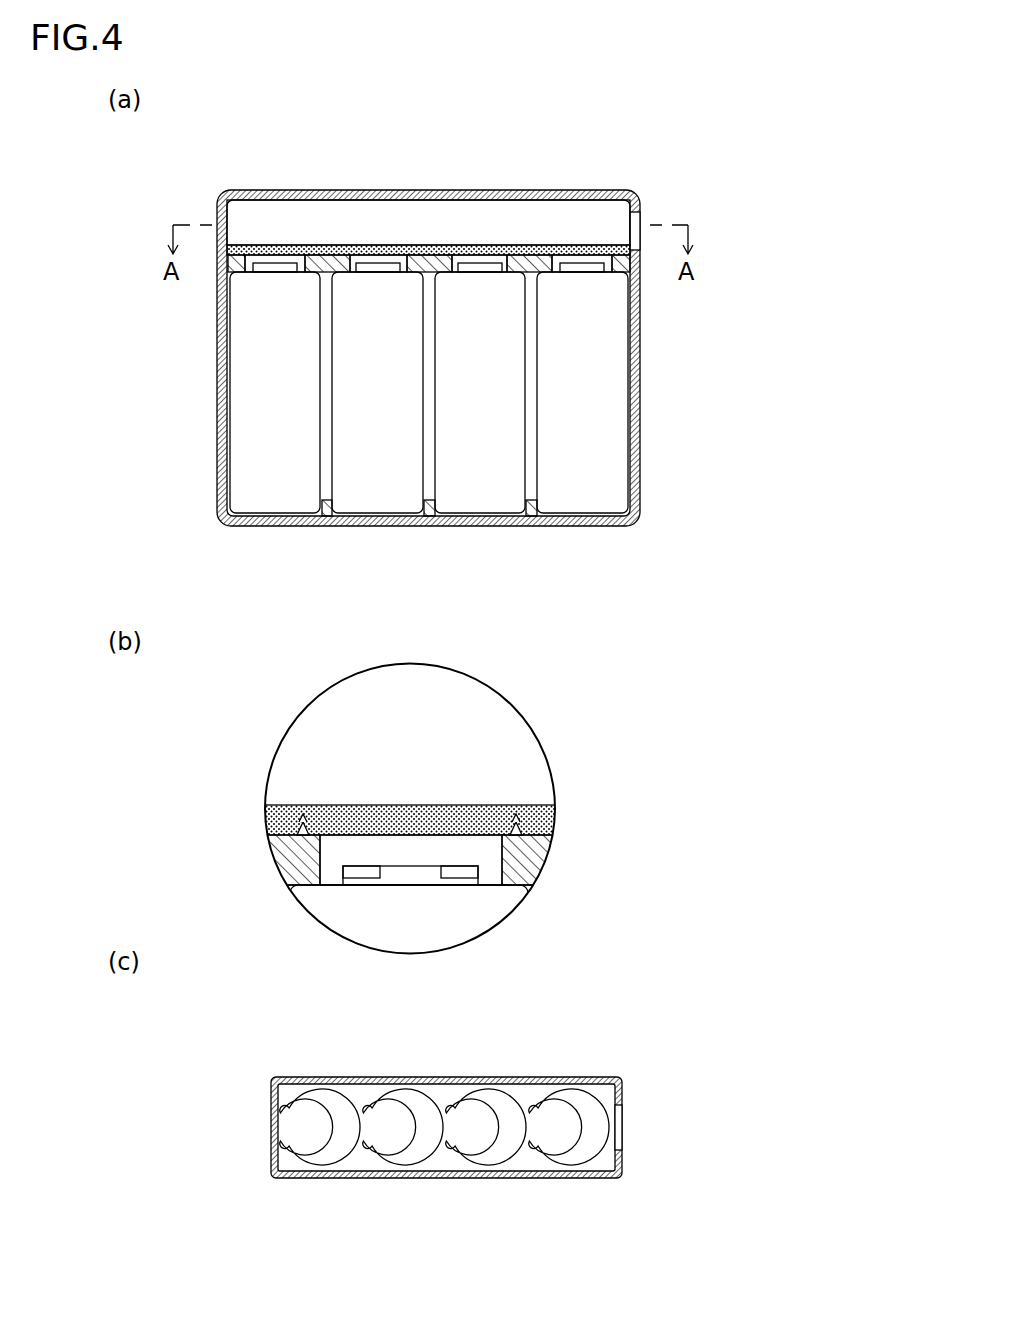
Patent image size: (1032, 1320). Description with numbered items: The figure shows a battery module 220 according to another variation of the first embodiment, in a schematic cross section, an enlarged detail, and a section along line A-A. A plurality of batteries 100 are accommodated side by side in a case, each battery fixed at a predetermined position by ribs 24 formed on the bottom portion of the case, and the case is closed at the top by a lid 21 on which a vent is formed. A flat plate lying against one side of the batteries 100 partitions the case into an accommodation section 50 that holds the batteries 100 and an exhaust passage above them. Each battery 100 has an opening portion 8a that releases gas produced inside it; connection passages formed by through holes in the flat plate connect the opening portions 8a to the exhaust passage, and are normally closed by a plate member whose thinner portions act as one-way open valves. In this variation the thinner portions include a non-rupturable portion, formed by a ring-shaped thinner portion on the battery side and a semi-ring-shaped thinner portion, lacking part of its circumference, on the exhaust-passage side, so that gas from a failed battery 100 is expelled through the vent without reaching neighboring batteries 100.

The battery module 220 is at (646, 112).
The lid 21 is at (470, 189).
The ribs 24 is at (337, 520).
The accommodation section 50 is at (530, 368).
The batteries 100 is at (298, 402).
The opening portion 8a is at (360, 876).